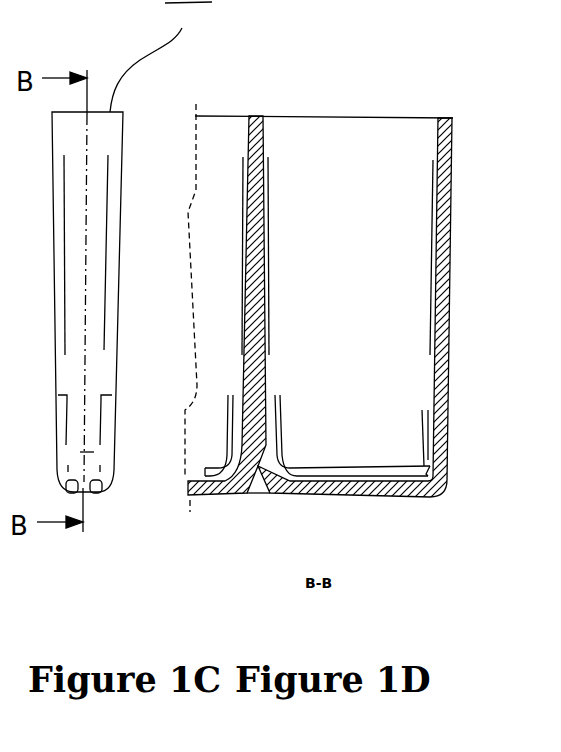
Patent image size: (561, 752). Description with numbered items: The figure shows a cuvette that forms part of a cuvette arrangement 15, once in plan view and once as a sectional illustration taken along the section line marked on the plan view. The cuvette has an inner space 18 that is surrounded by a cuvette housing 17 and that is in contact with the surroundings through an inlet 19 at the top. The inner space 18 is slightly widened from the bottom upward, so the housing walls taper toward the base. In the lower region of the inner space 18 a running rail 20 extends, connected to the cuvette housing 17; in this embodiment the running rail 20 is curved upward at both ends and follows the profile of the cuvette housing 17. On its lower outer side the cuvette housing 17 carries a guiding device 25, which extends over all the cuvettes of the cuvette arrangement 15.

In FIG. 1D, the cuvette arrangement 15 is at (285, 497).
In FIG. 1C, the cuvette housing 17 is at (118, 285).
In FIG. 1D, the cuvette housing 17 is at (450, 272).
In FIG. 1D, the inner space 18 is at (363, 306).
In FIG. 1D, the inlet 19 is at (380, 116).
In FIG. 1D, the running rail 20 is at (396, 466).
In FIG. 1C, the guiding device 25 is at (85, 493).